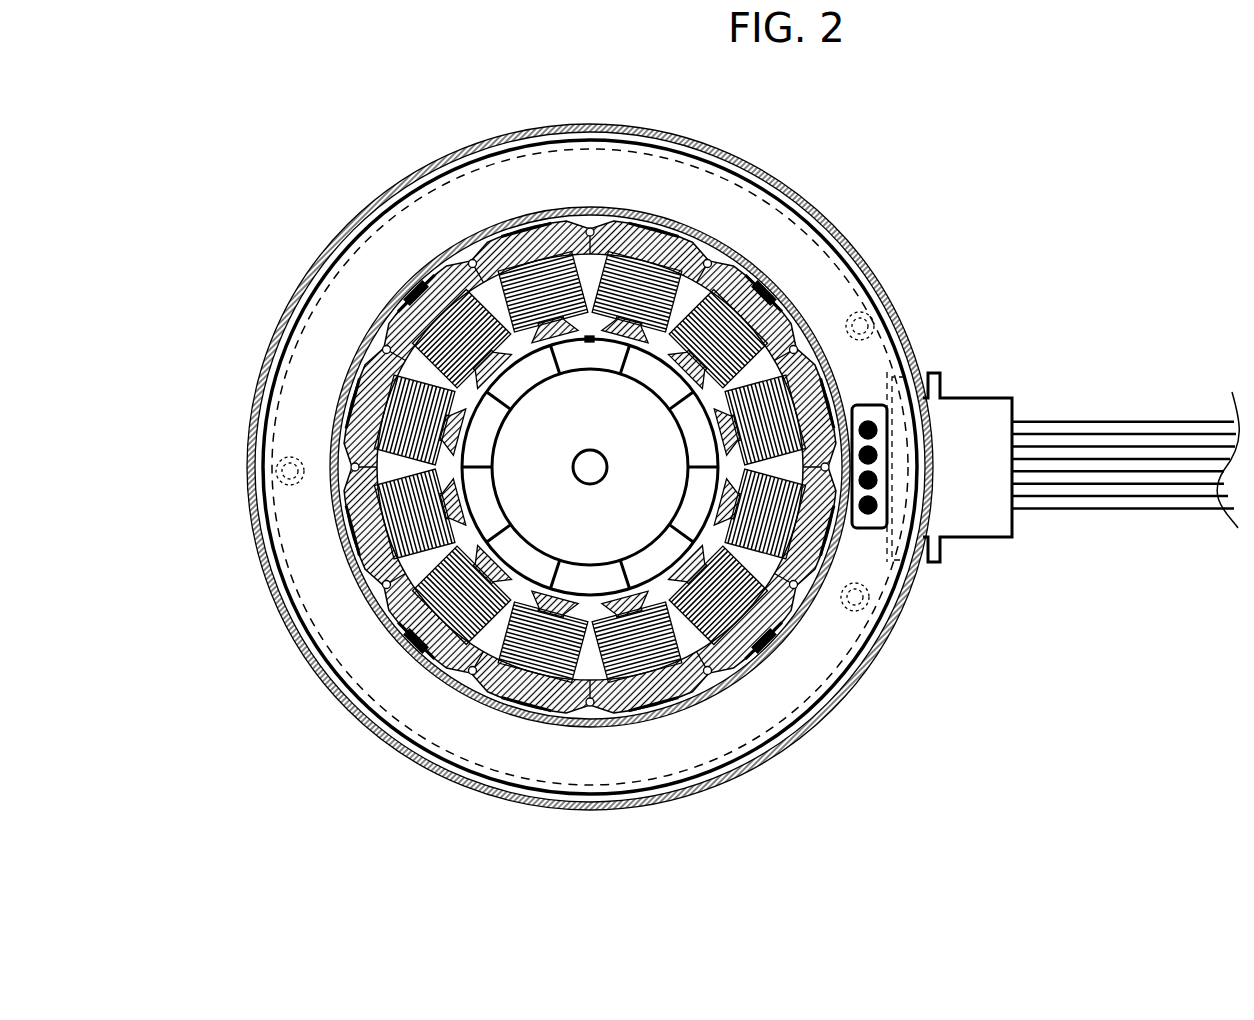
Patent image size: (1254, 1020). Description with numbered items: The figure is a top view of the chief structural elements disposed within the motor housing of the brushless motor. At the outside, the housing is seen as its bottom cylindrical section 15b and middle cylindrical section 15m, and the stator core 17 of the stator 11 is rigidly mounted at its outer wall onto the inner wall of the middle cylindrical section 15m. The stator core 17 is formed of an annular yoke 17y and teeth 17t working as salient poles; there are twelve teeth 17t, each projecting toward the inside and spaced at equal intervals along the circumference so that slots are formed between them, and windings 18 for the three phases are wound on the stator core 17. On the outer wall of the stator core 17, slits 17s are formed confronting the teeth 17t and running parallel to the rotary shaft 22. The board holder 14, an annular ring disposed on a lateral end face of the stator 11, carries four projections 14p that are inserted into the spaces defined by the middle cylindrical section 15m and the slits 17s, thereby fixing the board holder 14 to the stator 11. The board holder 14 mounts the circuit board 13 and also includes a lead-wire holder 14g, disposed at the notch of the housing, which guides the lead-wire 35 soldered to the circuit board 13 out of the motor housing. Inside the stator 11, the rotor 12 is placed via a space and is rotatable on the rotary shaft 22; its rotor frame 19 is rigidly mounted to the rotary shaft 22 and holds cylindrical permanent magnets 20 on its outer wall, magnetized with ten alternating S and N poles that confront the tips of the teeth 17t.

The stator 11 is at (541, 386).
The rotor 12 is at (680, 601).
The circuit board 13 is at (277, 522).
The board holder 14 is at (619, 467).
The lead-wire holder 14g is at (960, 522).
The projections 14p is at (410, 290).
The bottom cylindrical section 15b is at (415, 172).
The middle cylindrical section 15m is at (448, 243).
The stator core 17 is at (512, 389).
The slits 17s is at (358, 402).
The teeth 17t is at (578, 298).
The annular yoke 17y is at (523, 240).
The windings 18 is at (752, 270).
The rotor frame 19 is at (680, 537).
The permanent magnets 20 is at (670, 485).
The rotary shaft 22 is at (595, 472).
The lead-wire 35 is at (1093, 500).